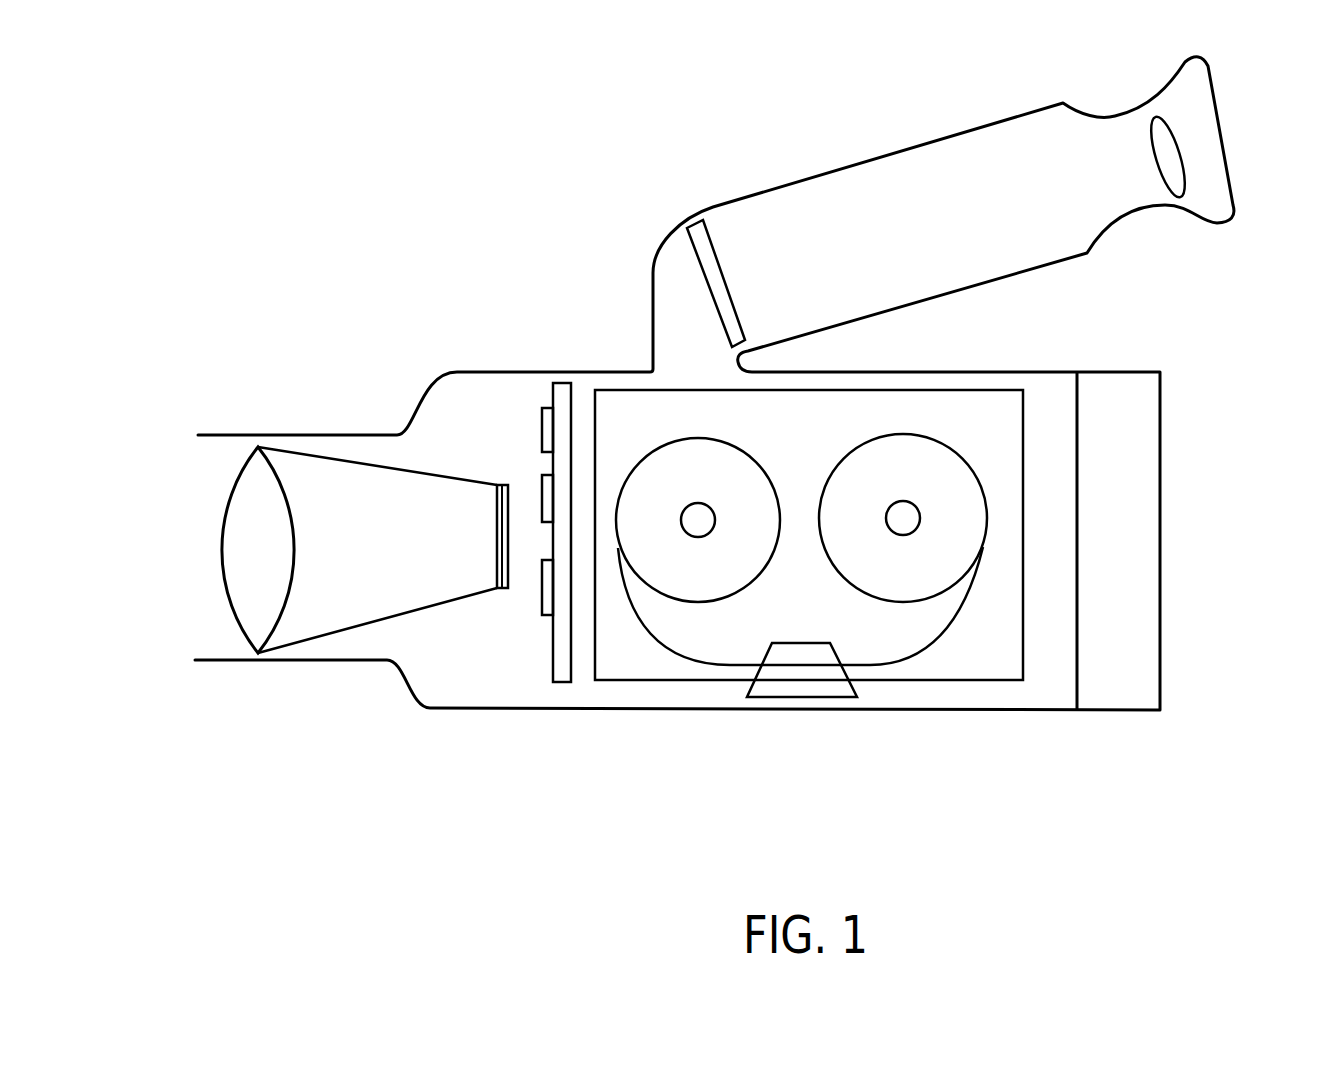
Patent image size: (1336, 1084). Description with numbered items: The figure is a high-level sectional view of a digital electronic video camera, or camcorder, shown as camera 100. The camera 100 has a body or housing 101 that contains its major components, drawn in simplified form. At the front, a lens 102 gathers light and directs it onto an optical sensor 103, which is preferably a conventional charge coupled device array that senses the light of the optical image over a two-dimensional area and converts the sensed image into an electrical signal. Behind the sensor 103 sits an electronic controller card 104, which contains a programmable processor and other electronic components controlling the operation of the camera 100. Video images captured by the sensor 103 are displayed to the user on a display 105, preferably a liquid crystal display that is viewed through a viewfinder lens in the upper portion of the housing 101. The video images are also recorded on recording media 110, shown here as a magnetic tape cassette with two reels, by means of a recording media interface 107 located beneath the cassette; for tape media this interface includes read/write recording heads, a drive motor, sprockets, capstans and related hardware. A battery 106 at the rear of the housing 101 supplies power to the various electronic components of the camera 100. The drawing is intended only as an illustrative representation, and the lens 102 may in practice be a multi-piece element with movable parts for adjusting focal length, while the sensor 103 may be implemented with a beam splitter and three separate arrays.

The camera 100 is at (438, 132).
The housing 101 is at (493, 708).
The lens 102 is at (222, 530).
The optical sensor 103 is at (497, 535).
The electronic controller card 104 is at (567, 383).
The display 105 is at (720, 267).
The battery 106 is at (1160, 573).
The recording media interface 107 is at (812, 698).
The recording media 110 is at (829, 435).